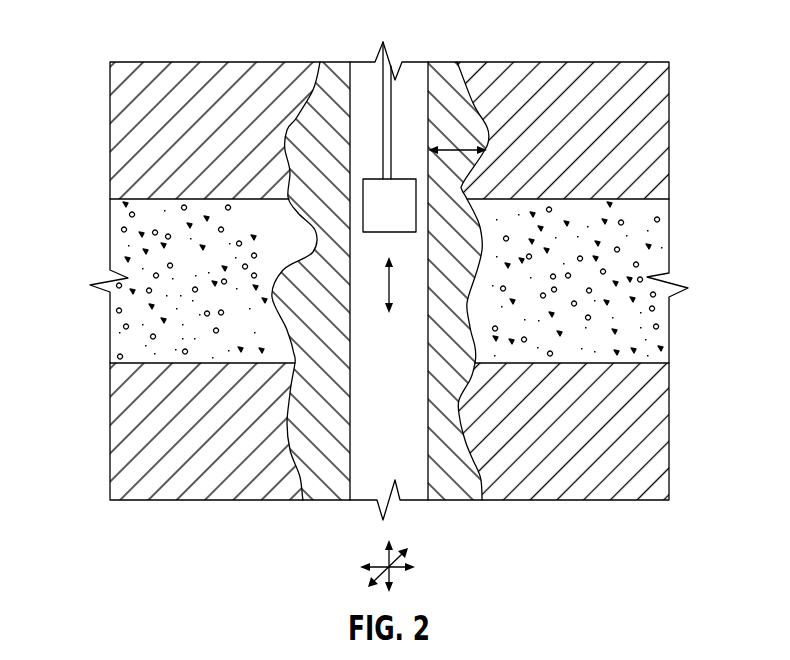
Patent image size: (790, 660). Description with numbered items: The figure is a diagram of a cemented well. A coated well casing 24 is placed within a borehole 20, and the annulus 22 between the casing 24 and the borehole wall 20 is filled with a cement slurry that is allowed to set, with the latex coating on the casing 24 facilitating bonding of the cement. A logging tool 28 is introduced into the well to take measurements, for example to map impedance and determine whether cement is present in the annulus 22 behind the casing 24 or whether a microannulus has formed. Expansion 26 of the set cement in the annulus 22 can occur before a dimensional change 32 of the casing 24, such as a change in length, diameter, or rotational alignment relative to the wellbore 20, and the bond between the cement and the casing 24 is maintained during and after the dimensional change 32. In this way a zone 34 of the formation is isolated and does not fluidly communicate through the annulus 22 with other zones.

The borehole 20 is at (488, 137).
The annulus 22 is at (340, 73).
The coated well casing 24 is at (430, 482).
The expansion 26 is at (458, 145).
The logging tool 28 is at (388, 232).
The dimensional change 32 is at (422, 560).
The zone 34 is at (120, 337).